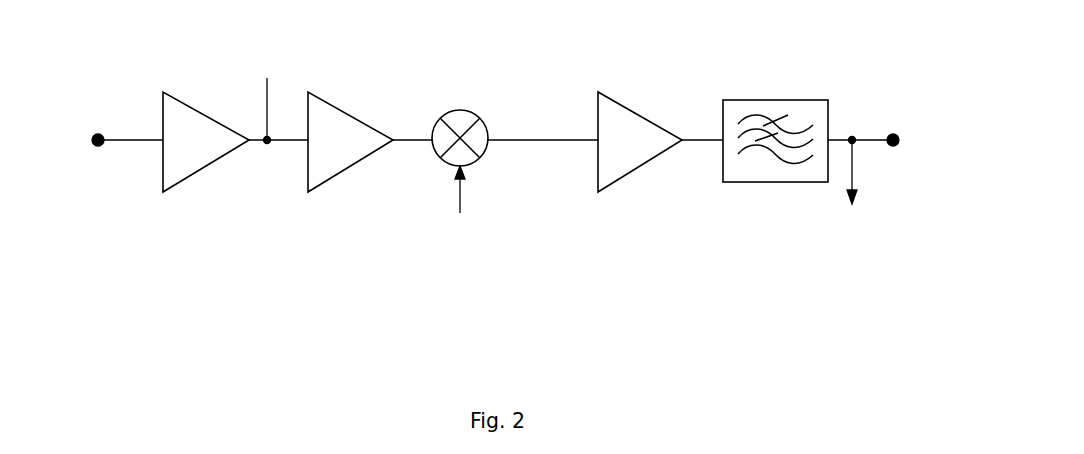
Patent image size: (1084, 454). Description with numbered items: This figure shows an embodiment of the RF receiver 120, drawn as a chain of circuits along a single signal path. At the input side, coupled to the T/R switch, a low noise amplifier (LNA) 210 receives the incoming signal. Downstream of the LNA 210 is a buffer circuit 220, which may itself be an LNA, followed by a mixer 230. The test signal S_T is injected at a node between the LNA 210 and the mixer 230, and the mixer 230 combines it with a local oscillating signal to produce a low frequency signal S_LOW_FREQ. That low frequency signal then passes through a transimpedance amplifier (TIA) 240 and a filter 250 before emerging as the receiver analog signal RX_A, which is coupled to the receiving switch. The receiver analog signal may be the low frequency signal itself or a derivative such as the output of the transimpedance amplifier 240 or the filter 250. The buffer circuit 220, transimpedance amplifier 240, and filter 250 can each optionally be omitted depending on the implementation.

The RF receiver 120 is at (502, 159).
The low noise amplifier (LNA) 210 is at (195, 105).
The buffer circuit 220 is at (340, 108).
The mixer 230 is at (463, 110).
The transimpedance amplifier (TIA) 240 is at (628, 105).
The filter 250 is at (778, 100).